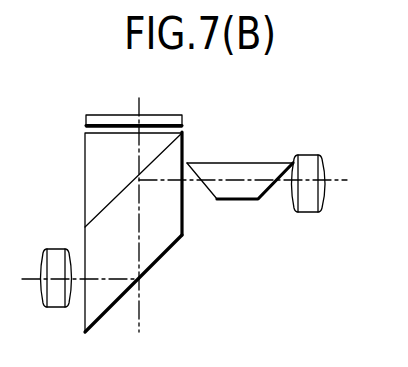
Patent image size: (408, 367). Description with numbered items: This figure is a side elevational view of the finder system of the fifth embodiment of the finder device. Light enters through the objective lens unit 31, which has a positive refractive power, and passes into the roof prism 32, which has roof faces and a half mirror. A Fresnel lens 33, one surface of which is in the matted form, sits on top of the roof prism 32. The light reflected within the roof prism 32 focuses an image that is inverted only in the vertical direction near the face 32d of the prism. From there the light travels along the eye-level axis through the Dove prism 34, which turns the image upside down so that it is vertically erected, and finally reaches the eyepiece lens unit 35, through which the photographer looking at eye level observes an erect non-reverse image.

The objective lens unit 31 is at (58, 310).
The roof prism 32 is at (106, 309).
The face 32d is at (184, 214).
The Fresnel lens 33 is at (170, 119).
The Dove prism 34 is at (247, 200).
The eyepiece lens unit 35 is at (315, 213).